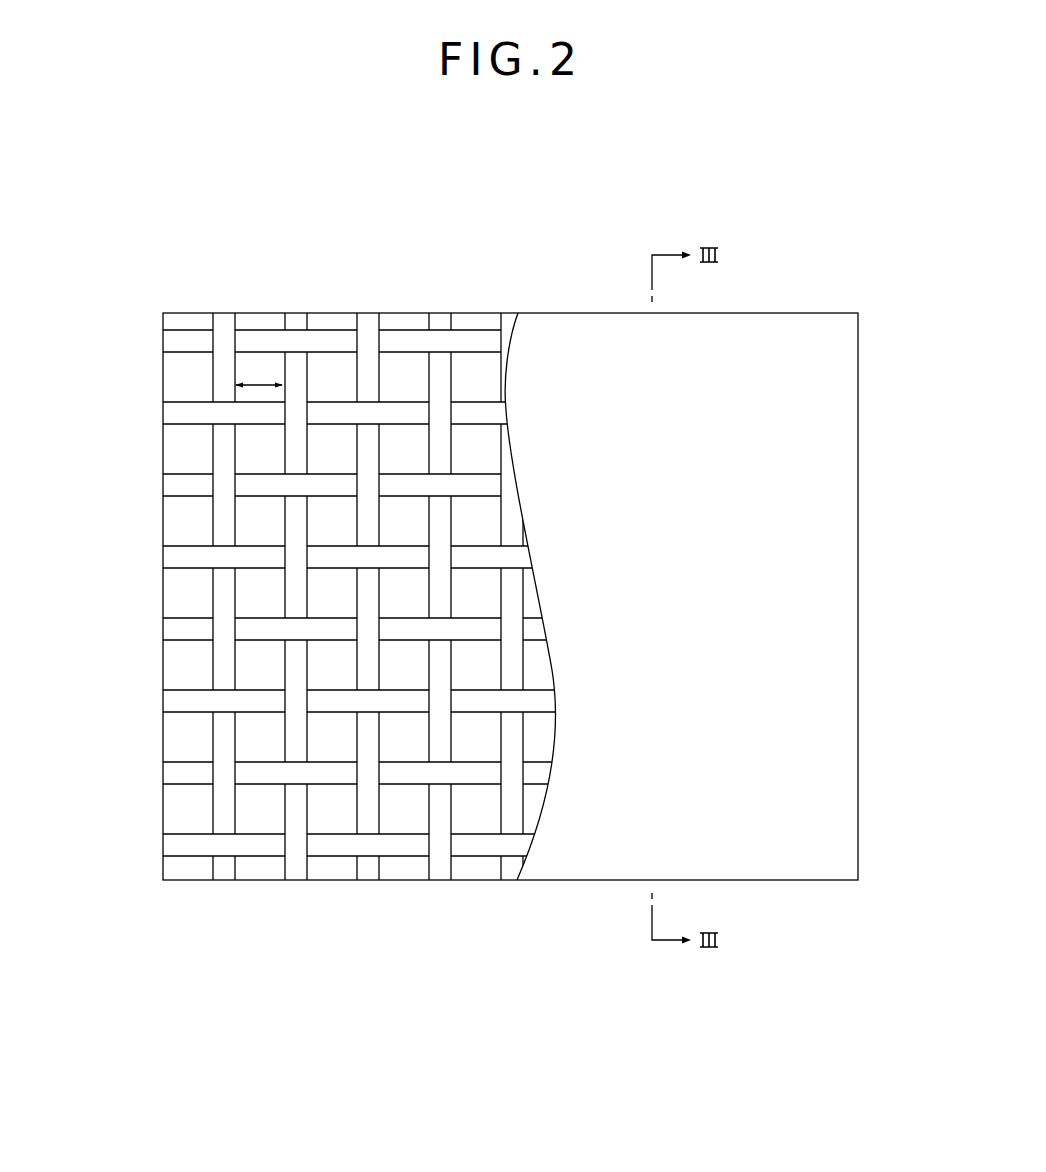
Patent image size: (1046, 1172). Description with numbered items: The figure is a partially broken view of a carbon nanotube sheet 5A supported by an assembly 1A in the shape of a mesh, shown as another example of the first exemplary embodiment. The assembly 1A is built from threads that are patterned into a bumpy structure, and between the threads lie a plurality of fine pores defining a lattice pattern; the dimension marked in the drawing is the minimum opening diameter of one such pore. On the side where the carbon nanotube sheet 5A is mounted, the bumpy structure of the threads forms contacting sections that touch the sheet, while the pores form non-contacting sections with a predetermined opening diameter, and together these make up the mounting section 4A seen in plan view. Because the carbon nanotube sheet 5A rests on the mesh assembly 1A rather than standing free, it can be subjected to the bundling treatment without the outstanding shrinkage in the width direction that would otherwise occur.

The assembly in the shape of a mesh 1A is at (501, 626).
The mounting section 4A is at (381, 659).
The carbon nanotube sheet 5A is at (832, 555).